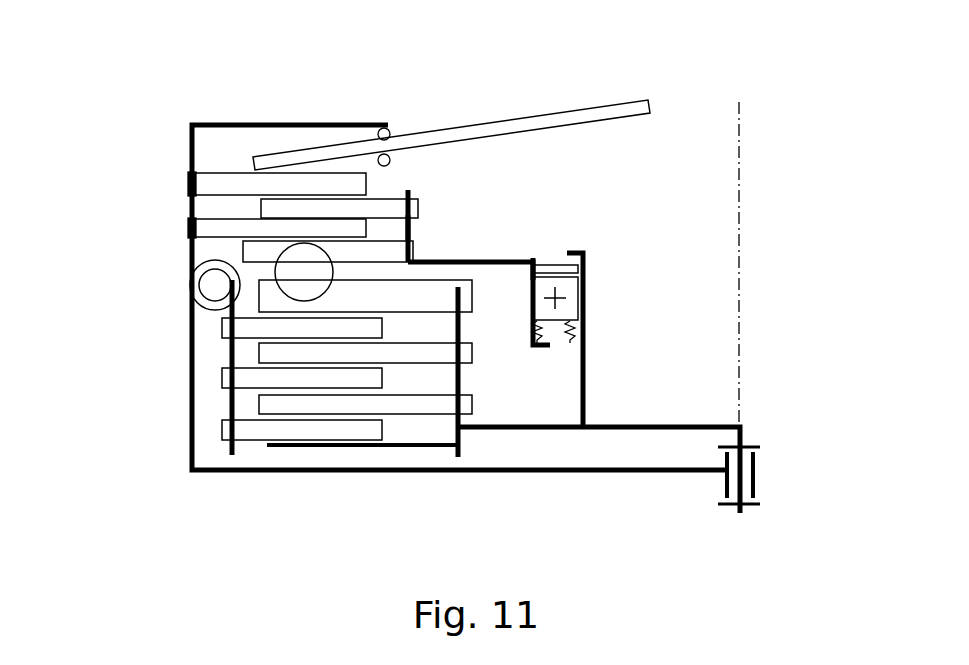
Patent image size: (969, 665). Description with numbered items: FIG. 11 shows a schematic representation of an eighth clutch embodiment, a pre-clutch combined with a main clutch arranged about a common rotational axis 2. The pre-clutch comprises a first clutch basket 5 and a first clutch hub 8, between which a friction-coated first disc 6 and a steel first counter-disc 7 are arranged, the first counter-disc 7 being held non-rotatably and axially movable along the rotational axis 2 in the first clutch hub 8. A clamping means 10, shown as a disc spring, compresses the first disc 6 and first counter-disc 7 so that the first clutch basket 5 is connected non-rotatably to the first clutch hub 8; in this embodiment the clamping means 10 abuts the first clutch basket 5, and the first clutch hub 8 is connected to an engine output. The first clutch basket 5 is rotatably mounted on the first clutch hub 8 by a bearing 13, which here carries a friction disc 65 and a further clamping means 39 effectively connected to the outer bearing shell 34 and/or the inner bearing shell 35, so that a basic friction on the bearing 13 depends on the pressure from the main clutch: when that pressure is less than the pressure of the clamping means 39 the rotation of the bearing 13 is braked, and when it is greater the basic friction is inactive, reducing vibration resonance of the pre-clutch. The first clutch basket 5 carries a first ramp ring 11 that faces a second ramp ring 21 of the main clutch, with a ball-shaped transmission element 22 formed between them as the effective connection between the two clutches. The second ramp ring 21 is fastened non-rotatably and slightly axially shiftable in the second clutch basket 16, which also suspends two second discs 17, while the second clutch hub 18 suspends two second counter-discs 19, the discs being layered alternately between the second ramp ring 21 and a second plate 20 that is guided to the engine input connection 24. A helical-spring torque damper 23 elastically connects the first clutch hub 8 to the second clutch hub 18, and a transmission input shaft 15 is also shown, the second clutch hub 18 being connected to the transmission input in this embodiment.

The rotational axis 2 is at (739, 299).
The first clutch basket 5 is at (238, 122).
The first disc 6 is at (200, 182).
The first counter-disc 7 is at (413, 207).
The first clutch hub 8 is at (410, 227).
The clamping means 10 is at (540, 122).
The first ramp ring 11 is at (407, 253).
The bearing 13 is at (586, 293).
The transmission input shaft 15 is at (747, 510).
The second clutch basket 16 is at (228, 403).
The second discs 17 is at (222, 332).
The second clutch hub 18 is at (462, 383).
The second counter-discs 19 is at (475, 352).
The second plate 20 is at (385, 448).
The second ramp ring 21 is at (463, 295).
The transmission element 22 is at (303, 262).
The torque damper 23 is at (207, 283).
The engine input connection 24 is at (725, 487).
The outer bearing shell 34 is at (585, 258).
The inner bearing shell 35 is at (545, 258).
The clamping means 39 is at (543, 338).
The friction disc 65 is at (553, 268).